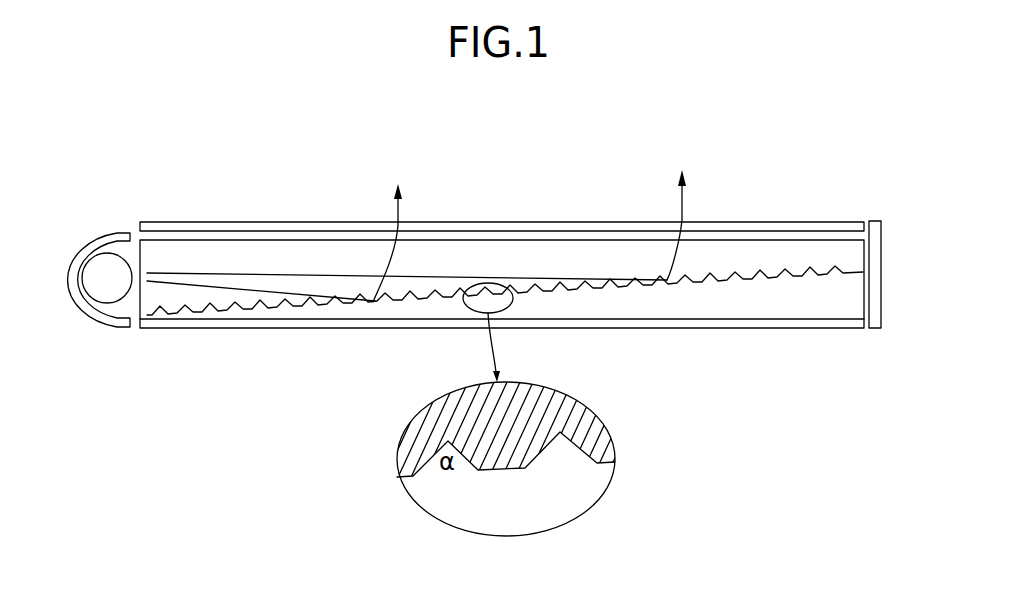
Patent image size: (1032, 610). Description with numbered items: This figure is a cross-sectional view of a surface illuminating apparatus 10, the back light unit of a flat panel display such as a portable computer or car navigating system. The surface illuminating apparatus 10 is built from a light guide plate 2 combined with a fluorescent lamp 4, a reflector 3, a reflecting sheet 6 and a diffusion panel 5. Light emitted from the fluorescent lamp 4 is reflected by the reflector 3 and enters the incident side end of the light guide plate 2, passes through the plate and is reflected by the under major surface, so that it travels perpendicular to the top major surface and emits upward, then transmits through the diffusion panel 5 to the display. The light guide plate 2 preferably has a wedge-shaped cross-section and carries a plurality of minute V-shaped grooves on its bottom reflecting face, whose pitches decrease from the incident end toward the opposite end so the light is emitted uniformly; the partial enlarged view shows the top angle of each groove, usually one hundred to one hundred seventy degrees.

The surface illuminating apparatus 10 is at (494, 204).
The light guide plate 2 is at (223, 255).
The reflector 3 is at (80, 243).
The fluorescent lamp 4 is at (107, 293).
The diffusion panel 5 is at (753, 222).
The reflecting sheet 6 is at (755, 328).